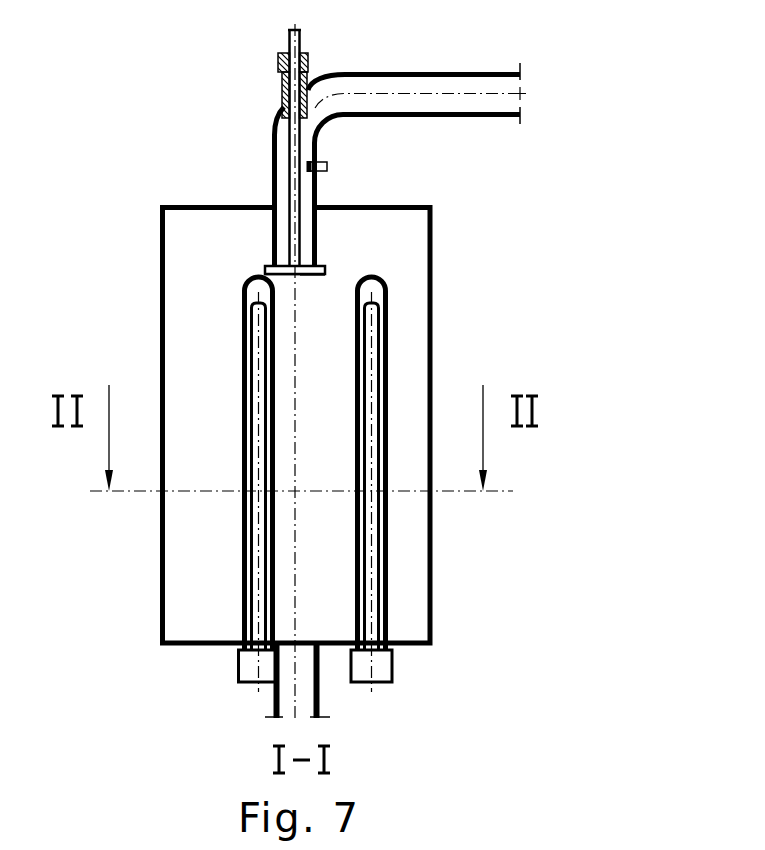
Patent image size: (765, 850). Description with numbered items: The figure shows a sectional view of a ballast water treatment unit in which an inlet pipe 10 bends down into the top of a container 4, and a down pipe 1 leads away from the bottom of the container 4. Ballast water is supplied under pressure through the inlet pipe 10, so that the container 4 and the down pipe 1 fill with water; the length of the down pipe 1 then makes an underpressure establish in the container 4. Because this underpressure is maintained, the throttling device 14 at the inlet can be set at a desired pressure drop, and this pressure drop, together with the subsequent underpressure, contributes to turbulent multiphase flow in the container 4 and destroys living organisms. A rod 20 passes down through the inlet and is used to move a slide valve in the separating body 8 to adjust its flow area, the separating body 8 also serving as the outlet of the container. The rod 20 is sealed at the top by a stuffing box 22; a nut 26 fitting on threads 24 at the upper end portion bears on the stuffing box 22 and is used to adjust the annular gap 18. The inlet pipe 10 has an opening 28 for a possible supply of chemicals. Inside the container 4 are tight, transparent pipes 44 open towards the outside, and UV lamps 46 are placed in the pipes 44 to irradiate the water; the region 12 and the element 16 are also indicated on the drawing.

The down pipe 1 is at (273, 698).
The container 4 is at (433, 525).
The separating body 8 is at (305, 647).
The inlet pipe 10 is at (453, 72).
The chamber 12 is at (308, 274).
The throttling device 14 is at (262, 186).
The plate 16 is at (266, 269).
The annular gap 18 is at (267, 261).
The rod 20 is at (292, 223).
The stuffing box 22 is at (283, 97).
The threads 24 is at (287, 43).
The nut 26 is at (310, 59).
The opening 28 is at (327, 166).
The transparent pipes 44 is at (388, 558).
The UV lamps 46 is at (372, 597).